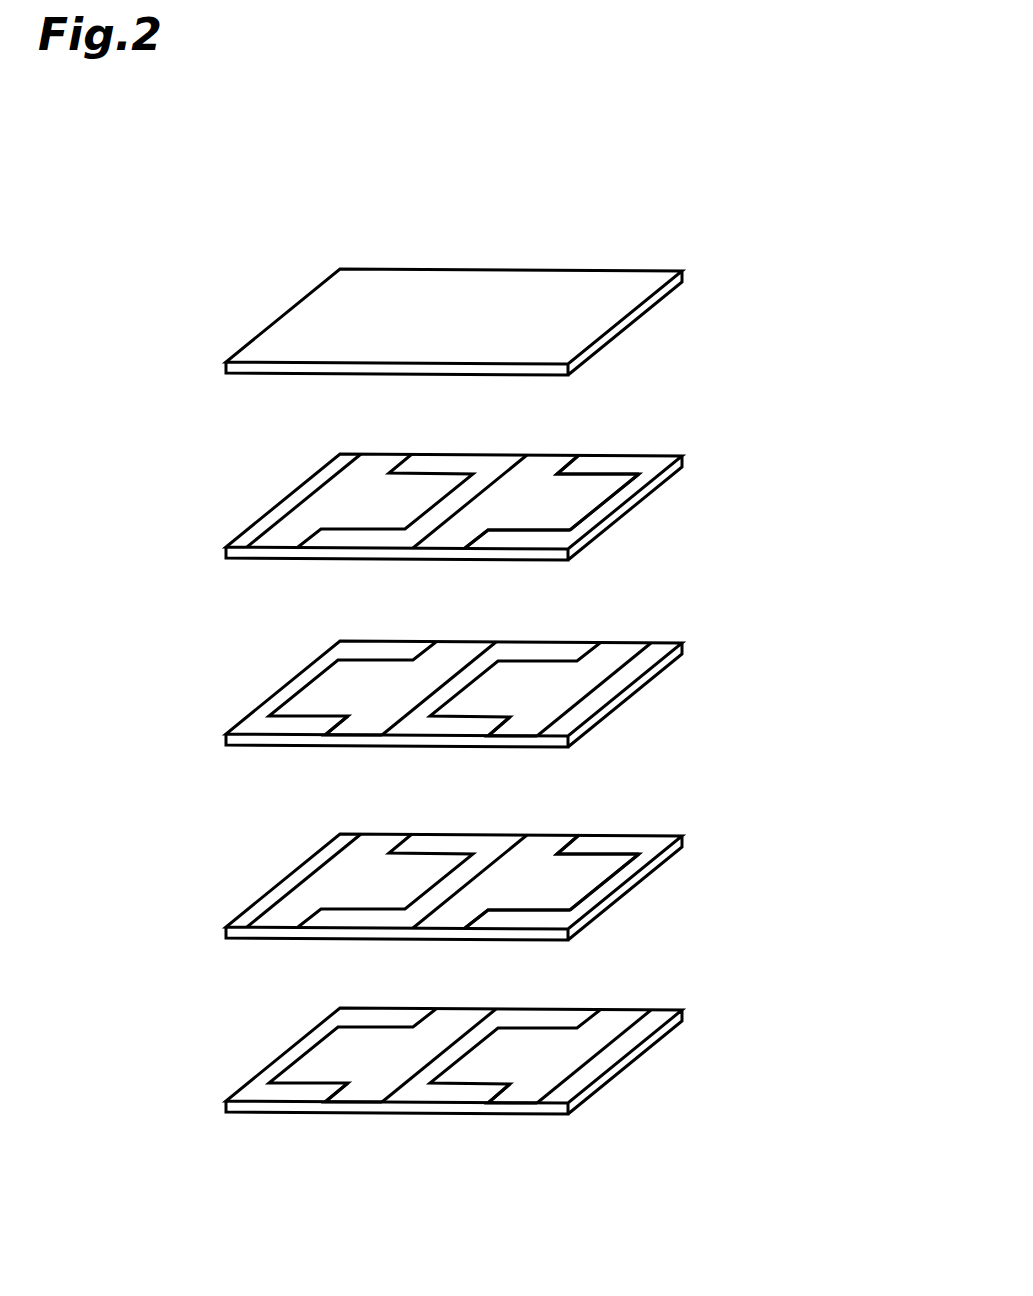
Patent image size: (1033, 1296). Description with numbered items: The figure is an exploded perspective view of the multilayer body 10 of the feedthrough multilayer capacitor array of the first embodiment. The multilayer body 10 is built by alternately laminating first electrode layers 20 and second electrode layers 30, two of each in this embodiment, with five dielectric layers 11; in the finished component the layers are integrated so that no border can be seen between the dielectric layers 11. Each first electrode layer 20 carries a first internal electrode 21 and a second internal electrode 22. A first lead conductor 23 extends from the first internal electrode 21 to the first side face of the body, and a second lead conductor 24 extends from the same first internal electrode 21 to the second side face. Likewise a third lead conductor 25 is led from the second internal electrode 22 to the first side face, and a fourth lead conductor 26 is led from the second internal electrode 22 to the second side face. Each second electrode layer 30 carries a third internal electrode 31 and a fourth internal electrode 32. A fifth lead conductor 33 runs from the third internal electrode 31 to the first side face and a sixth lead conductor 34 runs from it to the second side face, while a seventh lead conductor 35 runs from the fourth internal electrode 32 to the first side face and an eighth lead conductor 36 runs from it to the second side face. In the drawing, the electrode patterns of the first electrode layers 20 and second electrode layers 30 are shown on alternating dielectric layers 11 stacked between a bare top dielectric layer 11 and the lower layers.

The multilayer body 10 is at (97, 243).
The dielectric layer 11 is at (663, 300).
The first electrode layer 20 is at (166, 400).
The first internal electrode 21 is at (417, 500).
The second internal electrode 22 is at (587, 490).
The first lead conductor 23 is at (292, 535).
The second lead conductor 24 is at (377, 458).
The third lead conductor 25 is at (453, 540).
The fourth lead conductor 26 is at (543, 463).
The second electrode layer 30 is at (750, 593).
The third internal electrode 31 is at (345, 677).
The fourth internal electrode 32 is at (495, 682).
The fifth lead conductor 33 is at (363, 725).
The sixth lead conductor 34 is at (457, 652).
The seventh lead conductor 35 is at (520, 722).
The eighth lead conductor 36 is at (612, 652).